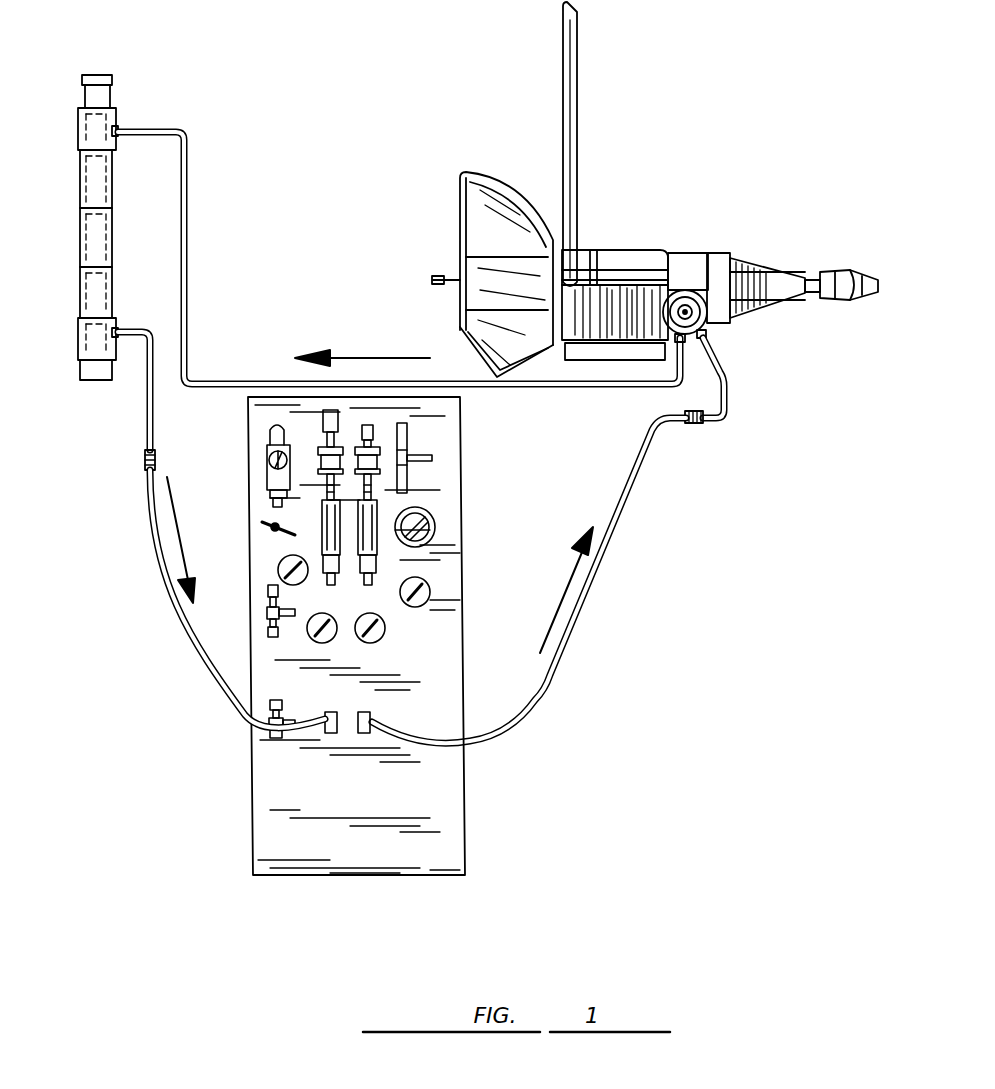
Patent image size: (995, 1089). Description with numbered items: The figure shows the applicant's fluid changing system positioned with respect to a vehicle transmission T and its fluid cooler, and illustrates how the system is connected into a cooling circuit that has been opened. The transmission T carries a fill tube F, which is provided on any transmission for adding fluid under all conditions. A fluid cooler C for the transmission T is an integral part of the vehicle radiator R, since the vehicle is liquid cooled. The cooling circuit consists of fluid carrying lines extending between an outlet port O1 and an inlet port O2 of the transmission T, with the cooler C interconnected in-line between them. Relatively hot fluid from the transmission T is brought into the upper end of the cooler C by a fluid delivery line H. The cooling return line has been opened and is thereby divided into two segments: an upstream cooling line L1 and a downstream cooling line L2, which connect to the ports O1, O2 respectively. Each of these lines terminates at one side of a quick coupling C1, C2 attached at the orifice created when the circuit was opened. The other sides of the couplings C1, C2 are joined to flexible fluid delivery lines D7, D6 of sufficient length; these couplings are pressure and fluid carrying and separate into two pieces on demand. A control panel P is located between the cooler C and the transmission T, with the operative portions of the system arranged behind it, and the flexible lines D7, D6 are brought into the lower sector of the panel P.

The radiator R is at (83, 380).
The fluid cooler C is at (120, 115).
The fluid delivery line H is at (187, 226).
The fill tube F is at (578, 165).
The transmission T is at (673, 248).
The outlet port O1 is at (687, 353).
The inlet port O2 is at (707, 336).
The cooling line L1 is at (147, 430).
The cooling line L2 is at (732, 397).
The quick coupling C1 is at (145, 458).
The quick coupling C2 is at (693, 425).
The flexible fluid delivery line D6 is at (605, 557).
The flexible fluid delivery line D7 is at (157, 554).
The control panel P is at (466, 810).